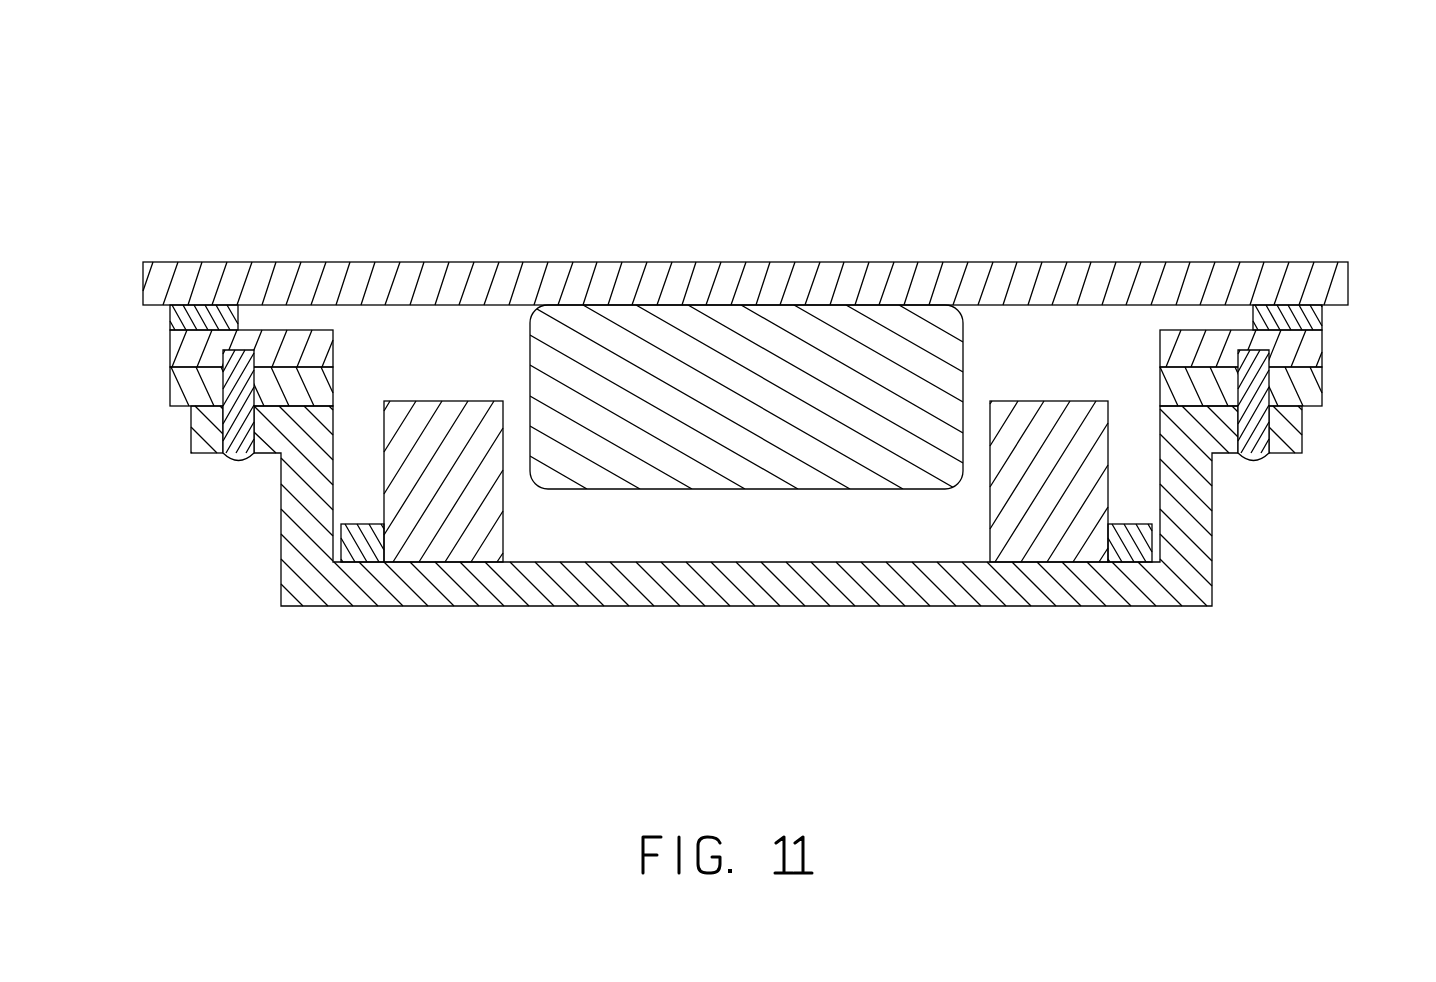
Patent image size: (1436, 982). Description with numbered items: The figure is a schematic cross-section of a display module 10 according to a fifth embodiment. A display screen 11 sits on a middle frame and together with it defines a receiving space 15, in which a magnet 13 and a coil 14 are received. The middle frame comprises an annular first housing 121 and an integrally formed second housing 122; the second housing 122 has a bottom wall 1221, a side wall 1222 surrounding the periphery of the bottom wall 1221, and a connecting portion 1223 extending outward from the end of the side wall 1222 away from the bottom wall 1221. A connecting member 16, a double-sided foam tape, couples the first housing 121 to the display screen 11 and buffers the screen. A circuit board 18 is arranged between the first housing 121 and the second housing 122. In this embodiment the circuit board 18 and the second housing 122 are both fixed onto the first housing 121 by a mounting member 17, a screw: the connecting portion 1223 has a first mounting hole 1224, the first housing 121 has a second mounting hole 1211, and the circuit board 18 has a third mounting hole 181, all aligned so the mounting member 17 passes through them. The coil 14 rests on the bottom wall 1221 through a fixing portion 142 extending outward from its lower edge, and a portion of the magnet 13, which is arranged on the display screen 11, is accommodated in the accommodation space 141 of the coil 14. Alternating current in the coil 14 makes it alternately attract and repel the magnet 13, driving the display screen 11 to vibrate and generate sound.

The display module 10 is at (735, 78).
The display screen 11 is at (362, 290).
The magnet 13 is at (670, 343).
The coil 14 is at (1007, 537).
The accommodation space 141 is at (665, 525).
The fixing portion 142 is at (1133, 547).
The receiving space 15 is at (1073, 348).
The connecting member 16 is at (1277, 323).
The mounting member 17 is at (1250, 452).
The circuit board 18 is at (195, 387).
The first housing 121 is at (190, 352).
The second mounting hole 1211 is at (1273, 355).
The second housing 122 is at (752, 546).
The bottom wall 1221 is at (425, 593).
The side wall 1222 is at (313, 530).
The connecting portion 1223 is at (207, 438).
The first mounting hole 1224 is at (1273, 440).
The third mounting hole 181 is at (1273, 397).